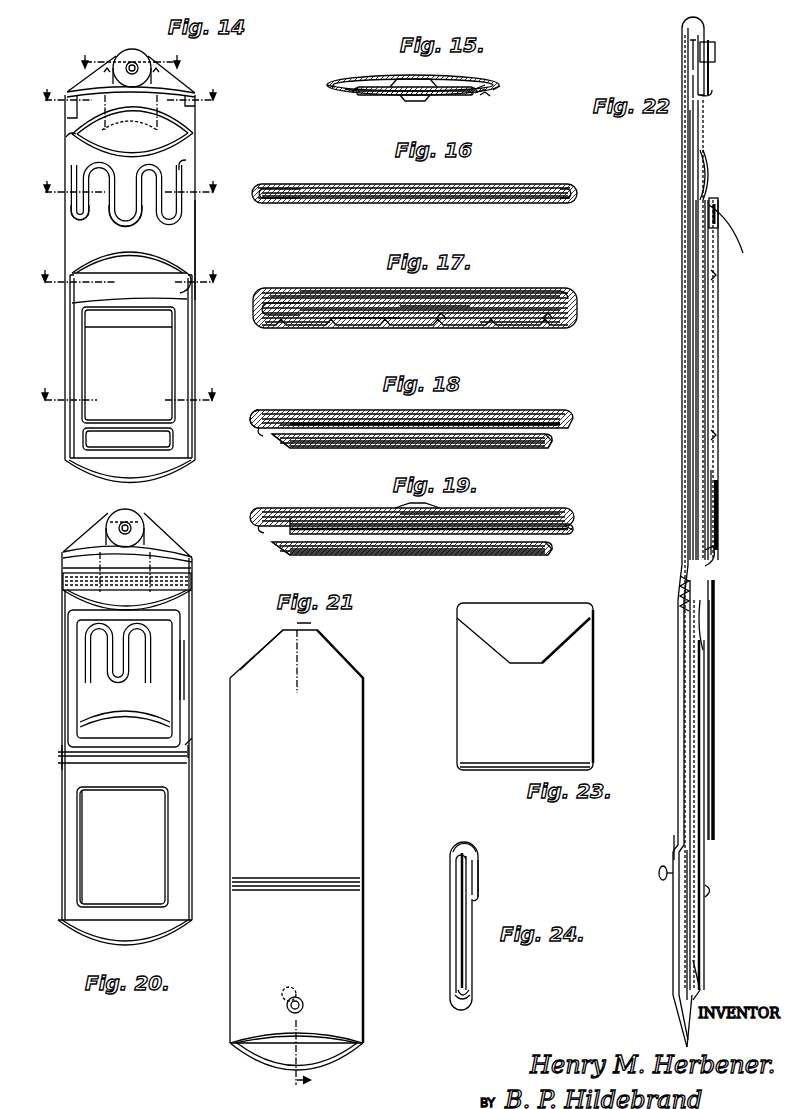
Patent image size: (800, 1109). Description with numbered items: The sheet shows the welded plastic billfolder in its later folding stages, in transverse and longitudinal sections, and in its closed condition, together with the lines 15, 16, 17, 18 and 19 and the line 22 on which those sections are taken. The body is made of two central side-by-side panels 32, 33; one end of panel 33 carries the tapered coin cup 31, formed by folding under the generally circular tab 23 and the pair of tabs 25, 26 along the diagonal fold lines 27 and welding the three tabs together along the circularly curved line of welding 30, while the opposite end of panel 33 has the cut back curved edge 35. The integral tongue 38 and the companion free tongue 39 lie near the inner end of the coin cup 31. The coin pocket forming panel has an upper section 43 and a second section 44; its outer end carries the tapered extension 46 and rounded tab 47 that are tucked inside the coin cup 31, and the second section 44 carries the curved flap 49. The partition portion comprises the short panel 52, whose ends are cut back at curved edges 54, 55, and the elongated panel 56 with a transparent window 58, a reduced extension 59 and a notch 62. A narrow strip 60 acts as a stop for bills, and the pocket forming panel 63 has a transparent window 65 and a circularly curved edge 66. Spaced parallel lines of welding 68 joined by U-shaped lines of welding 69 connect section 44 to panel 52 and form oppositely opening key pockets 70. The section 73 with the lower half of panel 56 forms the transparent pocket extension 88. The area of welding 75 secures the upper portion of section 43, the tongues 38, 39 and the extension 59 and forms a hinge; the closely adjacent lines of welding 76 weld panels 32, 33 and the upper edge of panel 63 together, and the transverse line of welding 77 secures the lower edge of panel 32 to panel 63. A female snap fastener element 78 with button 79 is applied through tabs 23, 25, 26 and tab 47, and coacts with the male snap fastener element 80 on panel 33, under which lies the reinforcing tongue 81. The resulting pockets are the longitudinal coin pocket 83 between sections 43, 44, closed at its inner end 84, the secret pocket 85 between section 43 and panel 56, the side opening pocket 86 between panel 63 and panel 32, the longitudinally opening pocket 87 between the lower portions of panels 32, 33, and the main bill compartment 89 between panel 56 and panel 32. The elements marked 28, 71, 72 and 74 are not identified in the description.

In FIG. 14, the section line 15 is at (129, 62).
In FIG. 14, the section line 16 is at (135, 109).
In FIG. 14, the section line 17 is at (133, 198).
In FIG. 14, the section line 18 is at (129, 281).
In FIG. 14, the section line 19 is at (128, 405).
In FIG. 19, the section line 22 is at (292, 524).
In FIG. 21, the section line 22 is at (306, 851).
In FIG. 20, the generally circular tab 23 is at (115, 526).
In FIG. 15, the generally circular tab 23 is at (387, 95).
In FIG. 22, the generally circular tab 23 is at (712, 75).
In FIG. 14, the tab 25 is at (108, 68).
In FIG. 15, the tab 25 is at (360, 94).
In FIG. 14, the tab 26 is at (163, 62).
In FIG. 15, the tab 26 is at (468, 95).
In FIG. 15, the diagonal fold lines 27 is at (332, 87).
In FIG. 15, the bar end 28 is at (502, 88).
In FIG. 14, the circularly curved line of welding 30 is at (152, 77).
In FIG. 20, the circularly curved line of welding 30 is at (147, 528).
In FIG. 15, the circularly curved line of welding 30 is at (482, 97).
In FIG. 22, the circularly curved line of welding 30 is at (708, 95).
In FIG. 14, the tapered coin cup 31 is at (133, 49).
In FIG. 20, the tapered coin cup 31 is at (94, 536).
In FIG. 15, the tapered coin cup 31 is at (495, 82).
In FIG. 21, the tapered coin cup 31 is at (338, 653).
In FIG. 23, the tapered coin cup 31 is at (545, 651).
In FIG. 24, the tapered coin cup 31 is at (483, 883).
In FIG. 22, the tapered coin cup 31 is at (707, 30).
In FIG. 14, the central elongated panel 32 is at (194, 302).
In FIG. 20, the central elongated panel 32 is at (190, 738).
In FIG. 17, the central elongated panel 32 is at (458, 302).
In FIG. 18, the central elongated panel 32 is at (542, 418).
In FIG. 19, the central elongated panel 32 is at (552, 517).
In FIG. 22, the central elongated panel 32 is at (690, 323).
In FIG. 15, the central elongated panel 33 is at (443, 80).
In FIG. 16, the central elongated panel 33 is at (487, 188).
In FIG. 17, the central elongated panel 33 is at (363, 293).
In FIG. 18, the central elongated panel 33 is at (477, 412).
In FIG. 19, the central elongated panel 33 is at (318, 513).
In FIG. 21, the central elongated panel 33 is at (308, 946).
In FIG. 23, the central elongated panel 33 is at (570, 691).
In FIG. 24, the central elongated panel 33 is at (455, 932).
In FIG. 22, the central elongated panel 33 is at (684, 298).
In FIG. 21, the cut back curved edge 35 is at (327, 1035).
In FIG. 14, the integral tongue 38 is at (68, 91).
In FIG. 16, the integral tongue 38 is at (307, 193).
In FIG. 14, the companion free tongue 39 is at (189, 97).
In FIG. 16, the companion free tongue 39 is at (538, 193).
In FIG. 17, the first rectangular panel section 43 is at (343, 326).
In FIG. 22, the first rectangular panel section 43 is at (703, 353).
In FIG. 14, the second rectangular panel section 44 is at (158, 270).
In FIG. 17, the second rectangular panel section 44 is at (312, 328).
In FIG. 22, the second rectangular panel section 44 is at (712, 317).
In FIG. 14, the tapered extension 46 is at (185, 116).
In FIG. 20, the tapered extension 46 is at (80, 567).
In FIG. 15, the tapered extension 46 is at (372, 75).
In FIG. 16, the tapered extension 46 is at (418, 198).
In FIG. 22, the tapered extension 46 is at (702, 120).
In FIG. 15, the rounded tab 47 is at (382, 88).
In FIG. 22, the rounded tab 47 is at (700, 80).
In FIG. 14, the curved flap 49 is at (76, 135).
In FIG. 20, the curved flap 49 is at (90, 598).
In FIG. 22, the curved flap 49 is at (743, 251).
In FIG. 14, the inner short panel 52 is at (182, 240).
In FIG. 20, the inner short panel 52 is at (185, 645).
In FIG. 17, the inner short panel 52 is at (503, 327).
In FIG. 22, the inner short panel 52 is at (718, 337).
In FIG. 14, the curved edge 54 is at (192, 139).
In FIG. 14, the curved edge 55 is at (88, 255).
In FIG. 17, the elongated rectangular panel 56 is at (413, 308).
In FIG. 22, the elongated rectangular panel 56 is at (695, 383).
In FIG. 20, the rectangular transparent window 58 is at (162, 625).
In FIG. 18, the rectangular transparent window 58 is at (400, 438).
In FIG. 19, the rectangular transparent window 58 is at (447, 548).
In FIG. 22, the rectangular transparent window 58 is at (705, 670).
In FIG. 14, the reduced rectangular extension 59 is at (139, 58).
In FIG. 16, the reduced rectangular extension 59 is at (430, 195).
In FIG. 22, the reduced rectangular extension 59 is at (693, 128).
In FIG. 14, the narrow strip 60 is at (67, 298).
In FIG. 20, the narrow strip 60 is at (60, 753).
In FIG. 18, the narrow strip 60 is at (262, 420).
In FIG. 14, the notch 62 is at (192, 289).
In FIG. 20, the notch 62 is at (124, 679).
In FIG. 14, the pocket forming panel 63 is at (68, 430).
In FIG. 20, the pocket forming panel 63 is at (70, 847).
In FIG. 18, the pocket forming panel 63 is at (267, 435).
In FIG. 19, the pocket forming panel 63 is at (268, 532).
In FIG. 22, the pocket forming panel 63 is at (701, 637).
In FIG. 14, the rectangular transparent window 65 is at (167, 443).
In FIG. 20, the rectangular transparent window 65 is at (134, 856).
In FIG. 18, the rectangular transparent window 65 is at (357, 427).
In FIG. 19, the rectangular transparent window 65 is at (467, 527).
In FIG. 22, the rectangular transparent window 65 is at (701, 693).
In FIG. 14, the circularly curved edge 66 is at (160, 480).
In FIG. 20, the circularly curved edge 66 is at (97, 938).
In FIG. 21, the circularly curved edge 66 is at (270, 1065).
In FIG. 22, the circularly curved edge 66 is at (692, 1040).
In FIG. 14, the parallel lines of welding 68 is at (166, 183).
In FIG. 17, the parallel lines of welding 68 is at (447, 328).
In FIG. 14, the U-shaped lines of welding 69 is at (107, 166).
In FIG. 22, the U-shaped lines of welding 69 is at (717, 277).
In FIG. 14, the key pockets 70 is at (128, 195).
In FIG. 20, the key pockets 70 is at (118, 654).
In FIG. 17, the key pockets 70 is at (350, 329).
In FIG. 22, the key pockets 70 is at (720, 405).
In FIG. 18, the pocket end 71 is at (277, 447).
In FIG. 19, the pocket end 71 is at (283, 542).
In FIG. 18, the pocket end 72 is at (543, 450).
In FIG. 19, the pocket end 72 is at (547, 552).
In FIG. 14, the section 73 is at (155, 349).
In FIG. 18, the section 73 is at (510, 443).
In FIG. 19, the section 73 is at (363, 553).
In FIG. 22, the section 73 is at (711, 720).
In FIG. 14, the window strip 74 is at (108, 314).
In FIG. 20, the area of welding 75 is at (177, 582).
In FIG. 24, the area of welding 75 is at (465, 843).
In FIG. 22, the area of welding 75 is at (701, 178).
In FIG. 20, the lines of welding 76 is at (189, 761).
In FIG. 21, the lines of welding 76 is at (360, 888).
In FIG. 23, the lines of welding 76 is at (492, 771).
In FIG. 24, the lines of welding 76 is at (468, 1005).
In FIG. 22, the lines of welding 76 is at (681, 593).
In FIG. 21, the transverse line of welding 77 is at (333, 1057).
In FIG. 22, the transverse line of welding 77 is at (692, 995).
In FIG. 15, the female snap fastener element 78 is at (414, 102).
In FIG. 24, the female snap fastener element 78 is at (482, 889).
In FIG. 22, the female snap fastener element 78 is at (715, 50).
In FIG. 15, the button 79 is at (415, 79).
In FIG. 22, the button 79 is at (697, 47).
In FIG. 19, the male snap fastener element 80 is at (406, 492).
In FIG. 21, the male snap fastener element 80 is at (303, 1002).
In FIG. 22, the male snap fastener element 80 is at (646, 875).
In FIG. 21, the reinforcing tongue 81 is at (300, 990).
In FIG. 22, the reinforcing tongue 81 is at (676, 837).
In FIG. 17, the coin holding pocket 83 is at (312, 312).
In FIG. 22, the coin holding pocket 83 is at (711, 213).
In FIG. 22, the closed inner end 84 is at (707, 553).
In FIG. 17, the secret pocket 85 is at (502, 307).
In FIG. 22, the secret pocket 85 is at (712, 517).
In FIG. 19, the side opening pocket 86 is at (573, 528).
In FIG. 22, the side opening pocket 86 is at (690, 750).
In FIG. 19, the longitudinally opening pocket 87 is at (507, 512).
In FIG. 22, the longitudinally opening pocket 87 is at (682, 943).
In FIG. 18, the transparent pocket extension 88 is at (330, 438).
In FIG. 19, the transparent pocket extension 88 is at (347, 544).
In FIG. 22, the transparent pocket extension 88 is at (716, 615).
In FIG. 17, the main bill compartment 89 is at (533, 302).
In FIG. 22, the main bill compartment 89 is at (716, 497).